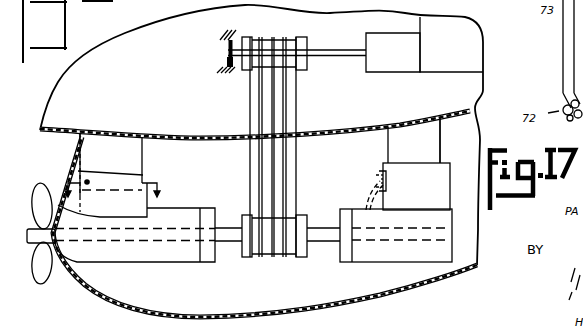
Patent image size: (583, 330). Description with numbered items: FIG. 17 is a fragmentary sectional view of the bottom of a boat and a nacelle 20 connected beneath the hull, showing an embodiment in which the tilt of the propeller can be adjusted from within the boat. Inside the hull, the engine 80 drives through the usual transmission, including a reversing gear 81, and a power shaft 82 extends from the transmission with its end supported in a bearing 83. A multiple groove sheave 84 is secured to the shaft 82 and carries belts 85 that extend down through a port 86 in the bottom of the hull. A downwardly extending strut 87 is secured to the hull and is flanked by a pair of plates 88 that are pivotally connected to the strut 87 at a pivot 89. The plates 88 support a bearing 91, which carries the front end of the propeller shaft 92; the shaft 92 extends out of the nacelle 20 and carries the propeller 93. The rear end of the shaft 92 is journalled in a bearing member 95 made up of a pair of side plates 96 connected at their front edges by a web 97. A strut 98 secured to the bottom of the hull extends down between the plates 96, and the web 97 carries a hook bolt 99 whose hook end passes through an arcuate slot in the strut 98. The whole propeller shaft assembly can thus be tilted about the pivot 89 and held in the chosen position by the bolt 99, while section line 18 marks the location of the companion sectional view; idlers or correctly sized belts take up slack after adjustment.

The section line 18- 18 is at (114, 197).
The nacelle 20 is at (440, 283).
The engine 80 is at (462, 51).
The reversing gear 81 is at (404, 61).
The power shaft 82 is at (333, 57).
The bearing 83 is at (226, 70).
The multiple groove sheave 84 is at (307, 40).
The belts 85 is at (282, 118).
The port 86 is at (318, 132).
The strut 87 is at (140, 154).
The plates 88 is at (143, 175).
The pivot 89 is at (87, 182).
The bearing 91 is at (150, 262).
The propeller shaft 92 is at (229, 243).
The propeller 93 is at (42, 281).
The bearing member 95 is at (386, 262).
The side plates 96 is at (466, 166).
The web 97 is at (374, 196).
The strut 98 is at (424, 157).
The hook bolt 99 is at (393, 173).